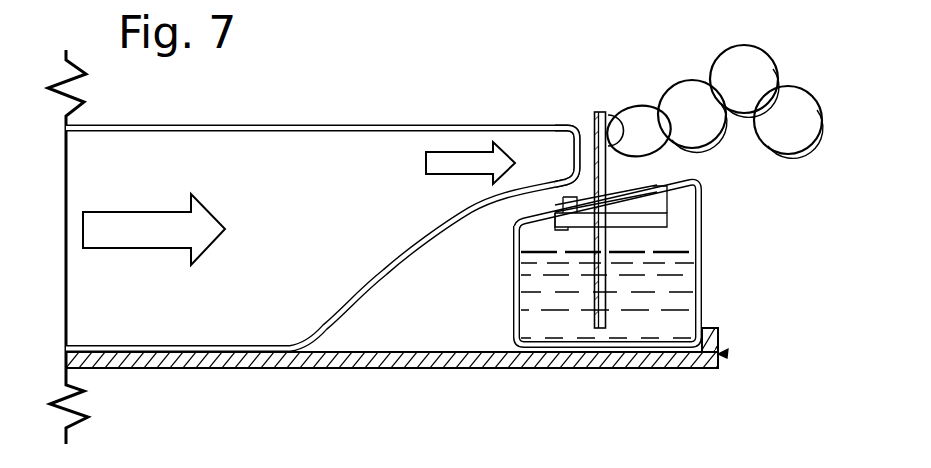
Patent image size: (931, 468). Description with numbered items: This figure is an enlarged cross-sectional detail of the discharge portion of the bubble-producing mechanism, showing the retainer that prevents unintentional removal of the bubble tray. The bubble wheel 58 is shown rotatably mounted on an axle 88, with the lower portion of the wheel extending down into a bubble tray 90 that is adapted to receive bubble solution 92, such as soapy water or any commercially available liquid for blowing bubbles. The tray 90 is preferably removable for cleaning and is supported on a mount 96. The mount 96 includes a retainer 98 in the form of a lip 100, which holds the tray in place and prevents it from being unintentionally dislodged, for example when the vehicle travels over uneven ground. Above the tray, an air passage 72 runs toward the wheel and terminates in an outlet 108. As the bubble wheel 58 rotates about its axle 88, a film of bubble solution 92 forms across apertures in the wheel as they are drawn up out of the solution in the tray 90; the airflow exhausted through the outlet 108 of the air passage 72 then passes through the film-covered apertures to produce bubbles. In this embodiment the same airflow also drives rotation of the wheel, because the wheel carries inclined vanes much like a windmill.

The bubble wheel 58 is at (600, 112).
The air passage 72 is at (257, 124).
The axle 88 is at (645, 228).
The bubble tray 90 is at (702, 200).
The bubble solution 92 is at (680, 302).
The mount 96 is at (637, 370).
The retainer 98 is at (724, 355).
The lip 100 is at (718, 335).
The outlet 108 is at (582, 140).